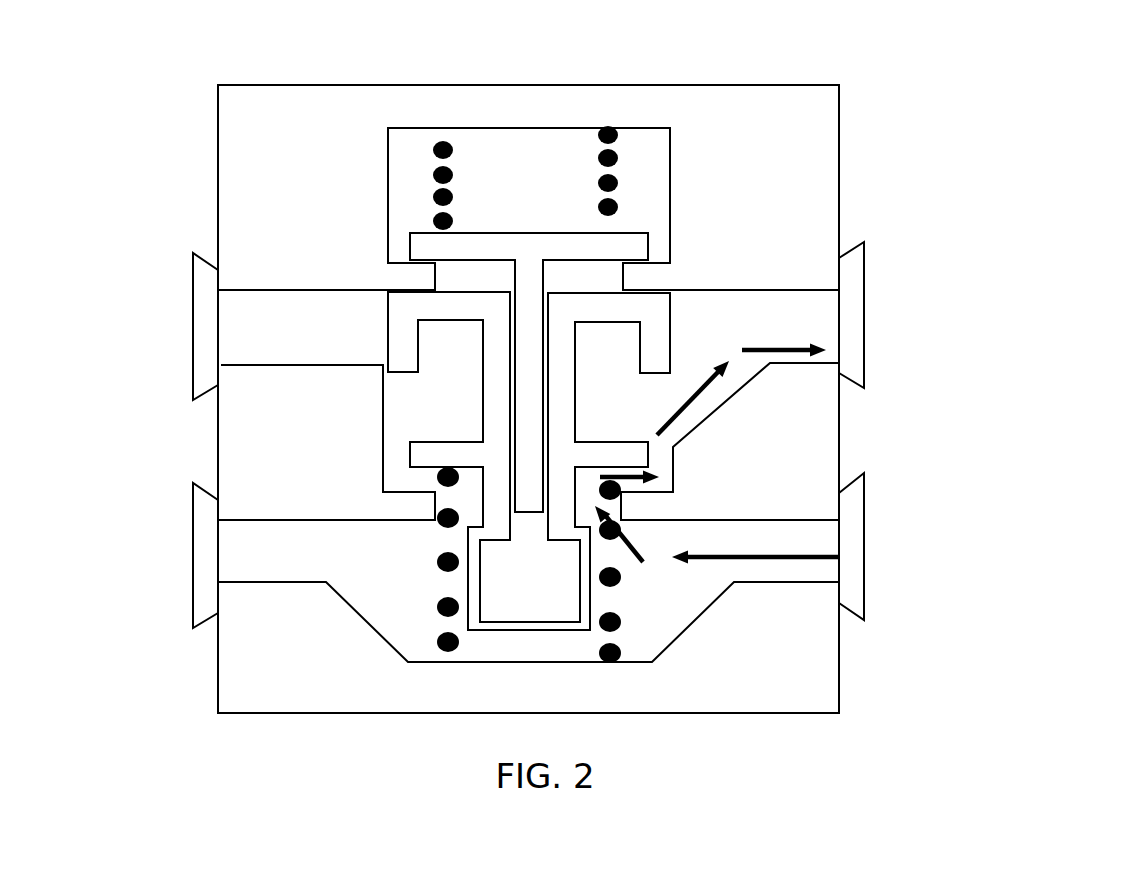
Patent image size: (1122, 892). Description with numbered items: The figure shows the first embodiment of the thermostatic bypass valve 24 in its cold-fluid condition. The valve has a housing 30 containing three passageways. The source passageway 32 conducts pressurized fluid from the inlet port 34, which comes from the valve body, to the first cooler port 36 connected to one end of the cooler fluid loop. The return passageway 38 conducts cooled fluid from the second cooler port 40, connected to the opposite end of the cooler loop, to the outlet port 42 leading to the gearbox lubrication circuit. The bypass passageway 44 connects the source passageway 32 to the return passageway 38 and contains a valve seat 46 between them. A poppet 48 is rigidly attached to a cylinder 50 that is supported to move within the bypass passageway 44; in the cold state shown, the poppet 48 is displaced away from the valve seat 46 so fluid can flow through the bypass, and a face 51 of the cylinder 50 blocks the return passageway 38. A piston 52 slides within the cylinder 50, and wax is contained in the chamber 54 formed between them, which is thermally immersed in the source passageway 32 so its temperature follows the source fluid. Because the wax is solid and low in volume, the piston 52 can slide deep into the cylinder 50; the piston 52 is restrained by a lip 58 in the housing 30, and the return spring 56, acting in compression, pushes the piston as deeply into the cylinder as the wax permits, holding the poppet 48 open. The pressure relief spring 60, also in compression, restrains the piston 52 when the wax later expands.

The bypass valve 24 is at (885, 197).
The housing 30 is at (283, 201).
The source passageway 32 is at (632, 608).
The inlet port 34 is at (865, 597).
The first cooler port 36 is at (195, 605).
The return passageway 38 is at (727, 338).
The second cooler port 40 is at (195, 284).
The outlet port 42 is at (865, 358).
The bypass passageway 44 is at (602, 433).
The valve seat 46 is at (397, 492).
The poppet 48 is at (430, 441).
The cylinder 50 is at (518, 630).
The face 51 is at (387, 312).
The piston 52 is at (510, 233).
The chamber 54 is at (514, 590).
The return spring 56 is at (437, 607).
The lip 58 is at (622, 280).
The pressure relief spring 60 is at (617, 185).